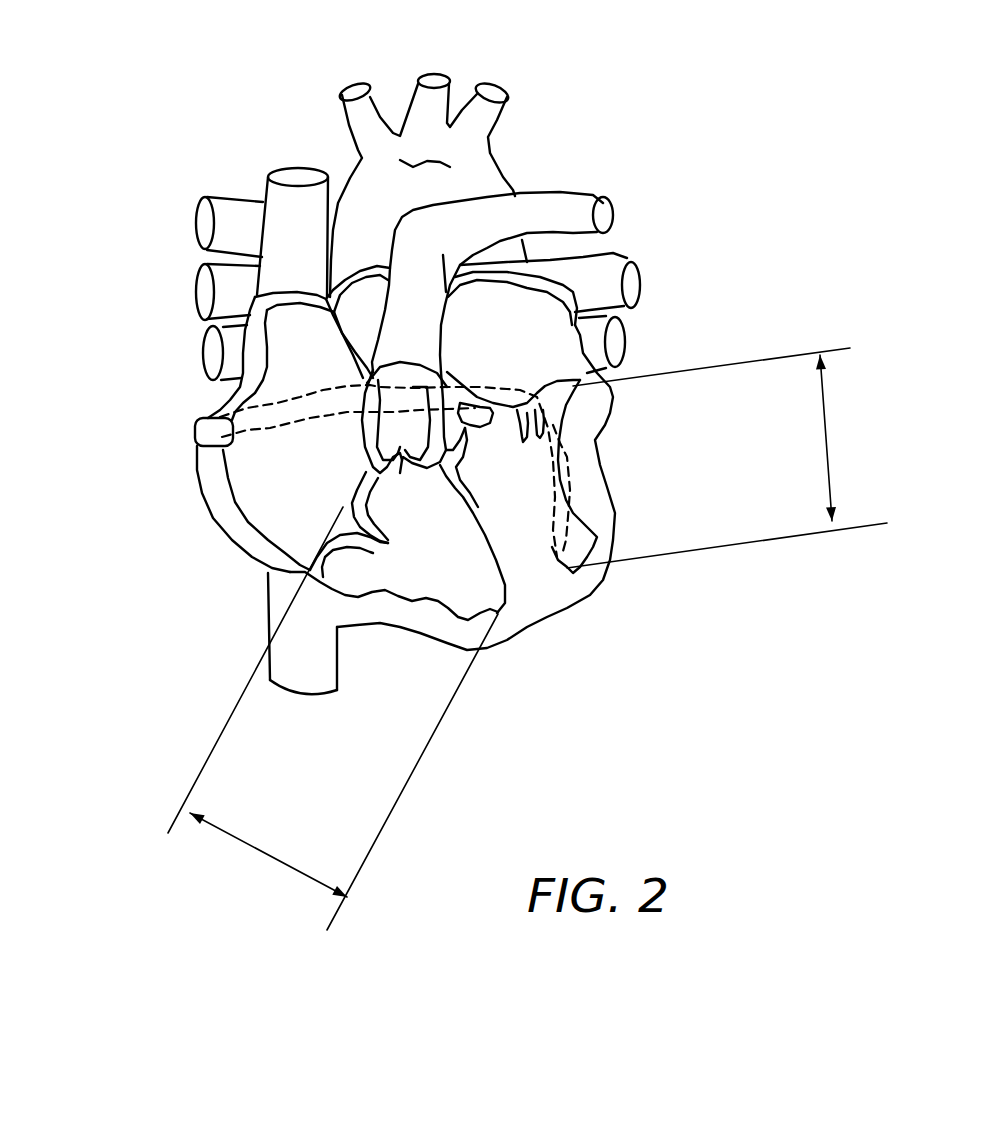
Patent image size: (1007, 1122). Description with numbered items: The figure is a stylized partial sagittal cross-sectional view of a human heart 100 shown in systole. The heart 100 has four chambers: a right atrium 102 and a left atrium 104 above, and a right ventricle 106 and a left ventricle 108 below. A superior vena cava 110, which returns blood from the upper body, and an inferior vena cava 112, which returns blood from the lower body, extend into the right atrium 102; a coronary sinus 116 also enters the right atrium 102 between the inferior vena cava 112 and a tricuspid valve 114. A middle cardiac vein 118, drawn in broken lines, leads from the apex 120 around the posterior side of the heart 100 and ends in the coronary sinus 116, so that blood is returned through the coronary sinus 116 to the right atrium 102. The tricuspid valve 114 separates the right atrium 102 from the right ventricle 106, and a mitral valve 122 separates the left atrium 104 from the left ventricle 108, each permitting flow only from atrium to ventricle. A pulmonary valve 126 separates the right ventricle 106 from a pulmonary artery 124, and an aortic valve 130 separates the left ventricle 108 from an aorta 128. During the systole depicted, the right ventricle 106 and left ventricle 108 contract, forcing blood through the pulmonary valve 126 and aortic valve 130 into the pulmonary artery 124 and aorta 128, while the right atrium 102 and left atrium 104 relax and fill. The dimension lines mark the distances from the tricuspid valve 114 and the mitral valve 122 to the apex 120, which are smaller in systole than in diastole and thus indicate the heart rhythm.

The heart 100 is at (618, 96).
The right atrium 102 is at (250, 472).
The left atrium 104 is at (513, 347).
The right ventricle 106 is at (443, 573).
The left ventricle 108 is at (535, 585).
The superior vena cava 110 is at (300, 212).
The inferior vena cava 112 is at (280, 605).
The tricuspid valve 114 is at (368, 548).
The coronary sinus 116 is at (273, 407).
The middle cardiac vein 118 is at (570, 537).
The apex 120 is at (478, 446).
The mitral valve 122 is at (573, 405).
The pulmonary artery 124 is at (445, 232).
The pulmonary valve 126 is at (398, 490).
The aorta 128 is at (428, 155).
The aortic valve 130 is at (527, 500).